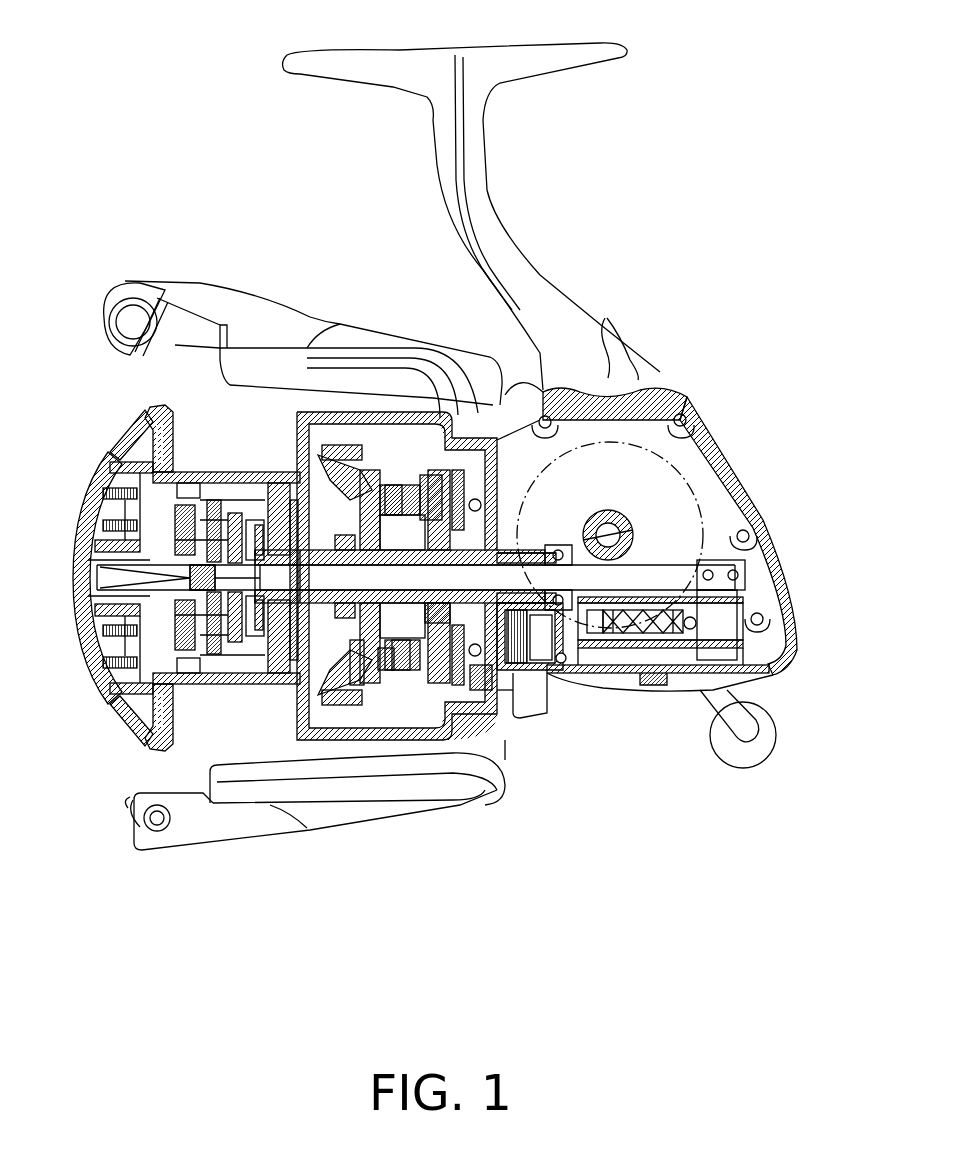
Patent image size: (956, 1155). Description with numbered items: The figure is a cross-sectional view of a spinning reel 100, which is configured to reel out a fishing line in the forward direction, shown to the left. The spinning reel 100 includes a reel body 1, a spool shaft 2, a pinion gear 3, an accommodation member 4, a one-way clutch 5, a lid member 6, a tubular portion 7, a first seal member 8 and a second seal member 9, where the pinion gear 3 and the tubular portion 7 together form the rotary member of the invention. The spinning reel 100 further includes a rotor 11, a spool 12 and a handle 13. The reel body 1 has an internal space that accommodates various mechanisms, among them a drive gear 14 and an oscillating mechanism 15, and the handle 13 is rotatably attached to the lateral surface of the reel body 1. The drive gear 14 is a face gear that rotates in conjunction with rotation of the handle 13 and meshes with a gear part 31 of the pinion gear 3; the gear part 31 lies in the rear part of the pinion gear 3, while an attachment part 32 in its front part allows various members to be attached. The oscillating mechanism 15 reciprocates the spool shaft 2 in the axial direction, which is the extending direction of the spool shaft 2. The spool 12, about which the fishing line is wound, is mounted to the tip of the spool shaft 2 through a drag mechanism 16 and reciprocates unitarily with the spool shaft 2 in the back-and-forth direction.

The spinning reel 100 is at (652, 128).
The reel body 1 is at (662, 364).
The spool shaft 2 is at (607, 580).
The pinion gear 3 is at (508, 668).
The accommodation member 4 is at (498, 430).
The one-way clutch 5 is at (430, 490).
The lid member 6 is at (390, 490).
The tubular portion 7 is at (360, 690).
The first seal member 8 is at (396, 650).
The second seal member 9 is at (388, 660).
The rotor 11 is at (400, 328).
The spool 12 is at (205, 462).
The handle 13 is at (745, 770).
The drive gear 14 is at (665, 458).
The oscillating mechanism 15 is at (655, 645).
The drag mechanism 16 is at (228, 682).
The gear part 31 is at (542, 645).
The attachment part 32 is at (437, 640).